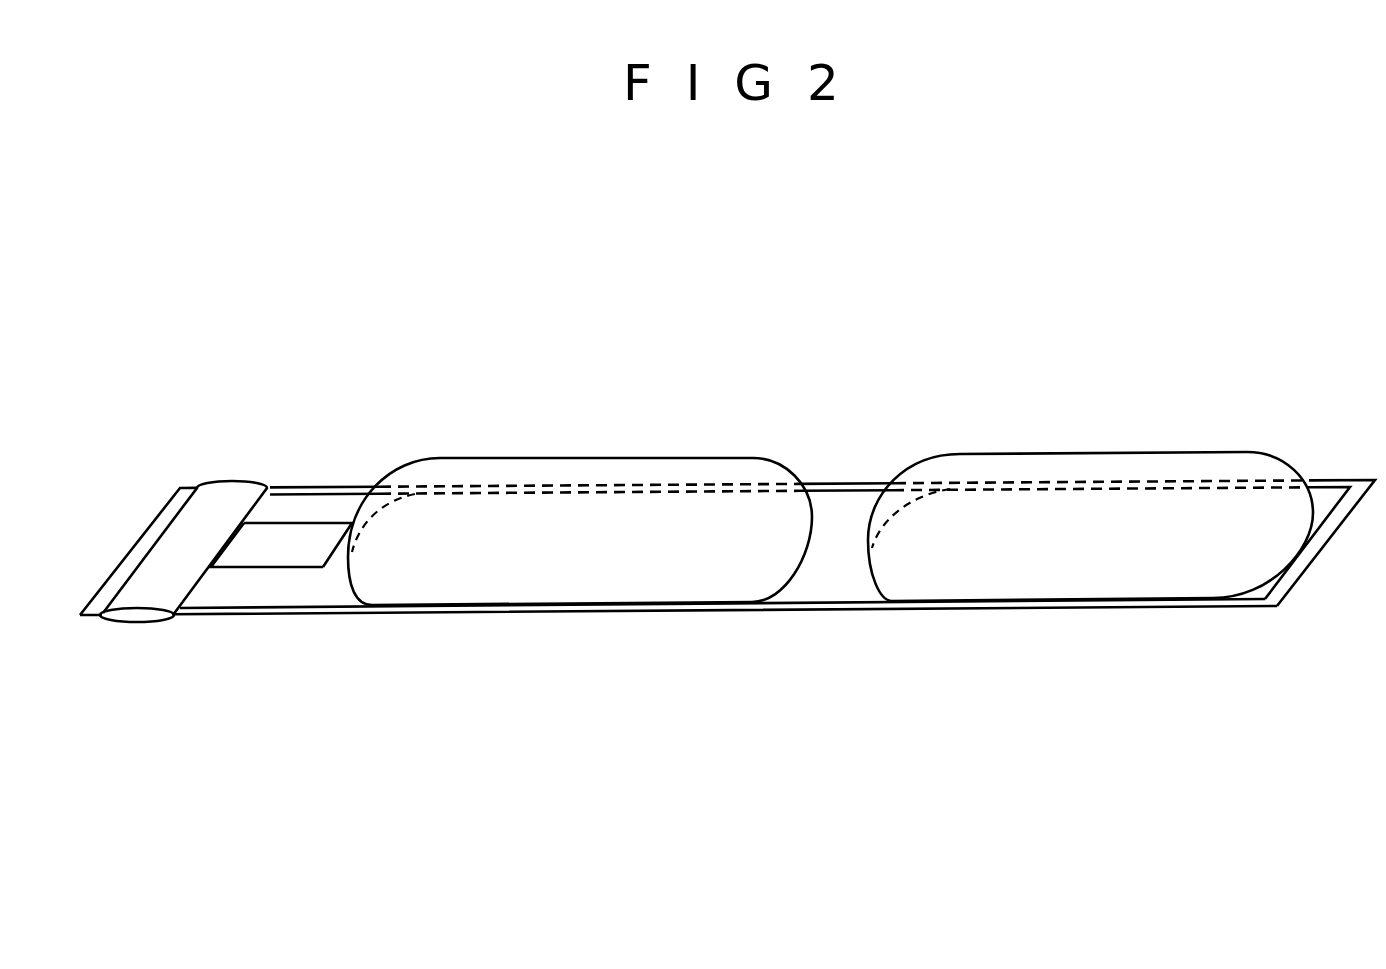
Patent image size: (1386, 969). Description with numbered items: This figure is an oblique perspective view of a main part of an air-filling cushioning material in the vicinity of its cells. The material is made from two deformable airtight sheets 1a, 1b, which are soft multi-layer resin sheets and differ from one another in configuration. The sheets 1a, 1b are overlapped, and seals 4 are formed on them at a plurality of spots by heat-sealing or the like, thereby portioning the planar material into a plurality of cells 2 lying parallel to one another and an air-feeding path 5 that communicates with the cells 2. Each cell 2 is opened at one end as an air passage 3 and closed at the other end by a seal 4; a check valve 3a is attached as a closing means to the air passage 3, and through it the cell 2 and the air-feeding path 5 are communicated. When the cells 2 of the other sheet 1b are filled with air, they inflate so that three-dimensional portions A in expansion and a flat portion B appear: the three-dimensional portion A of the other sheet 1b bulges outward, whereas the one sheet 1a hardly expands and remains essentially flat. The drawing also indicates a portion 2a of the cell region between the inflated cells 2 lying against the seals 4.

The airtight sheet 1a is at (1103, 567).
The airtight sheet 1b is at (1035, 458).
The cell 2 is at (587, 565).
The connecting portion between battery cells 2a is at (828, 573).
The air passage 3 is at (227, 540).
The check valve 3a is at (303, 548).
The seal 4 is at (143, 535).
The air-feeding path 5 is at (188, 552).
The three-dimensional portion A is at (553, 460).
The flat portion B is at (273, 592).